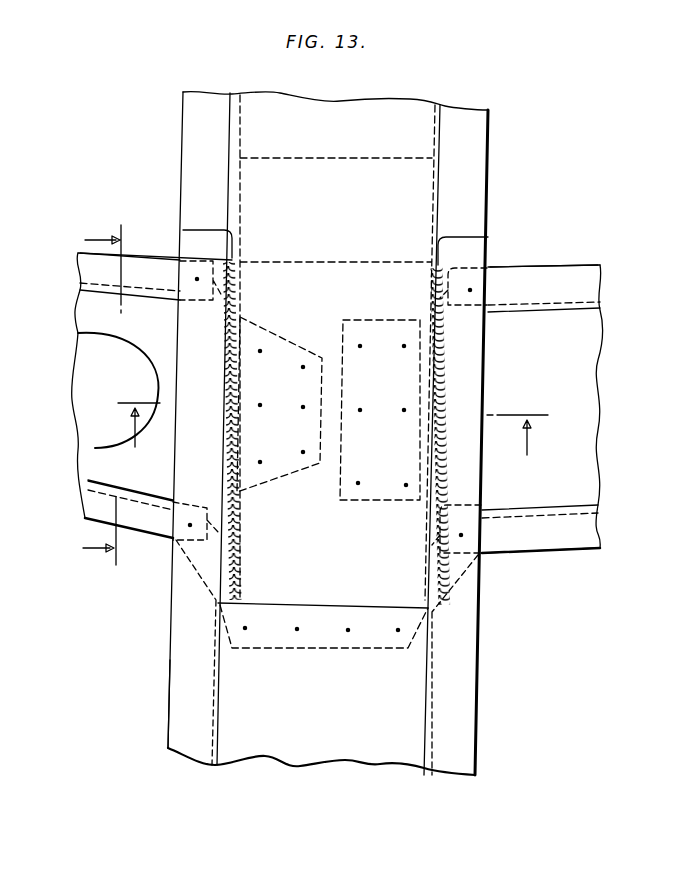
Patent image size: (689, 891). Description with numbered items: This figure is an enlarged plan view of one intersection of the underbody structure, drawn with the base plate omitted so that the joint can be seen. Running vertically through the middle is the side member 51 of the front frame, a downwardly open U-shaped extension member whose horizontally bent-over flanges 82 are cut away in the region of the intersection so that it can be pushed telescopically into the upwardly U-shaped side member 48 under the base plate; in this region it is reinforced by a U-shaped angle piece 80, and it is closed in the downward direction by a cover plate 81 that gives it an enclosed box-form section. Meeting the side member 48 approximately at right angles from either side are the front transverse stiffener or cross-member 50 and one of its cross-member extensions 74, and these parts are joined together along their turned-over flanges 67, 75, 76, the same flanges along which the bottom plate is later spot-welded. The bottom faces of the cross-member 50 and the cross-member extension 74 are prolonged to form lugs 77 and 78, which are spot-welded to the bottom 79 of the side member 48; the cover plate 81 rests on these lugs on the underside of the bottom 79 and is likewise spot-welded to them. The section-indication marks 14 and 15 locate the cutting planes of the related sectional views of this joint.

The side member of the front frame 51 is at (358, 108).
The horizontally bent-over flanges 82 is at (205, 132).
The U-shaped angle piece 80 is at (368, 165).
The cover plate 81 is at (203, 242).
The cross-member extensions 74 is at (123, 482).
The turned-over flange 75 is at (99, 277).
The front transverse stiffener 50 is at (558, 488).
The turned-over flange 67 is at (533, 282).
The lug 78 is at (272, 447).
The lug 77 is at (387, 475).
The turned-over flange 76 is at (193, 682).
The bottom of the side member 79 is at (298, 748).
The side member 48 is at (417, 768).
The section line 14 is at (333, 441).
The section line 15 is at (90, 395).